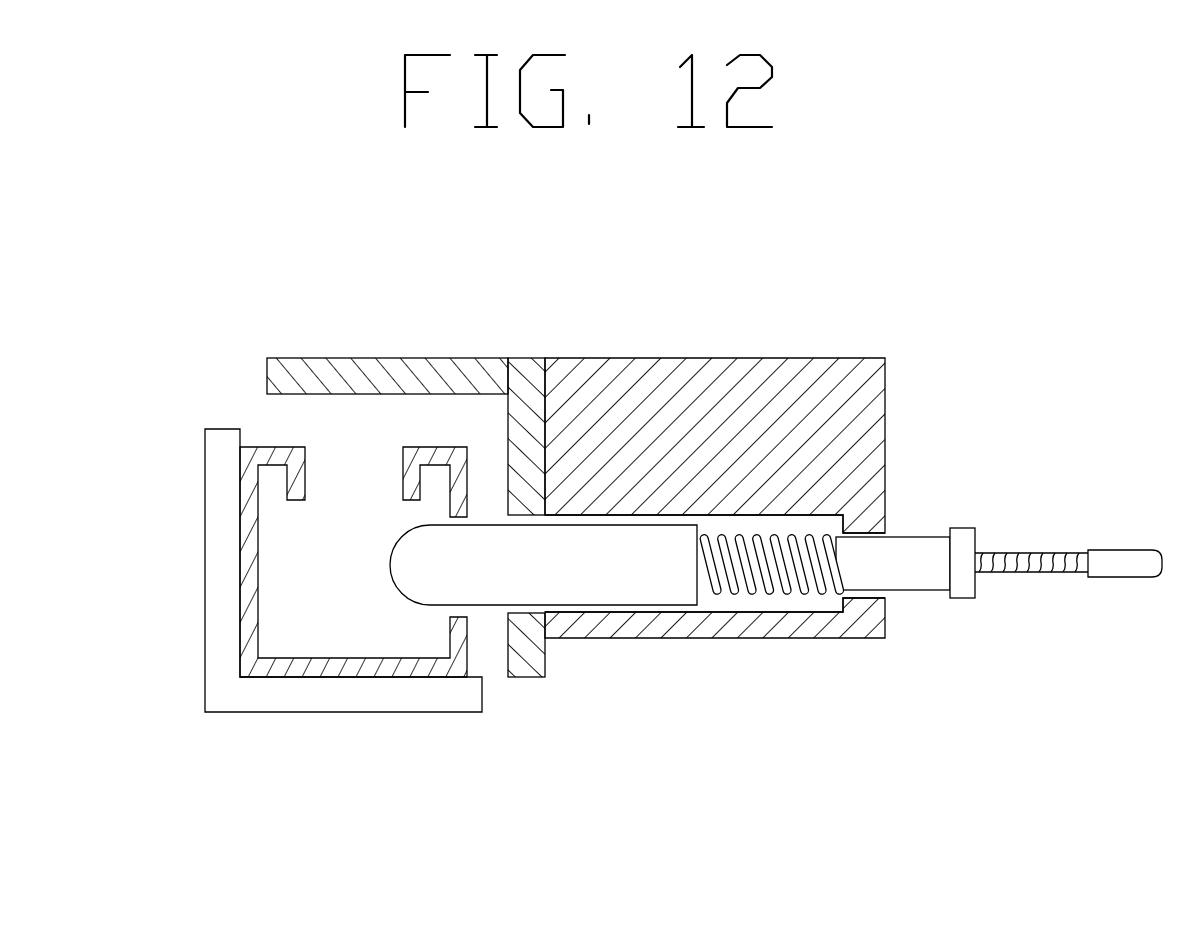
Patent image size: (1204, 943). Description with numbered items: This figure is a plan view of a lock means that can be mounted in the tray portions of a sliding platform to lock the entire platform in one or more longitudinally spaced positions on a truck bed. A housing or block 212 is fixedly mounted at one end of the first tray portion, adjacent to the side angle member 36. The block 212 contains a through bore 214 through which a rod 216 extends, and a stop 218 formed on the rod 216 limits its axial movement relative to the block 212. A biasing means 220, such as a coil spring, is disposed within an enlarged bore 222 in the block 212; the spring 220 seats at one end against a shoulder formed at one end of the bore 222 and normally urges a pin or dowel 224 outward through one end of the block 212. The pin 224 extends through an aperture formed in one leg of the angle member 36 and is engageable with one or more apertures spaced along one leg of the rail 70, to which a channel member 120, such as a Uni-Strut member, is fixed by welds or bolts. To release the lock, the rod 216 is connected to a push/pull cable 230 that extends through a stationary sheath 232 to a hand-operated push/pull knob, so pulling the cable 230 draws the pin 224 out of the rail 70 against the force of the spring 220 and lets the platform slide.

The side angle member 36 is at (508, 378).
The angle member 70 is at (223, 692).
The channel member 120 is at (437, 447).
The block 212 is at (652, 370).
The through bore 214 is at (921, 580).
The rod 216 is at (928, 557).
The stop 218 is at (963, 547).
The biasing means 220 is at (740, 547).
The enlarged bore 222 is at (727, 613).
The pin 224 is at (450, 582).
The push/pull cable 230 is at (997, 573).
The sheath 232 is at (1148, 567).